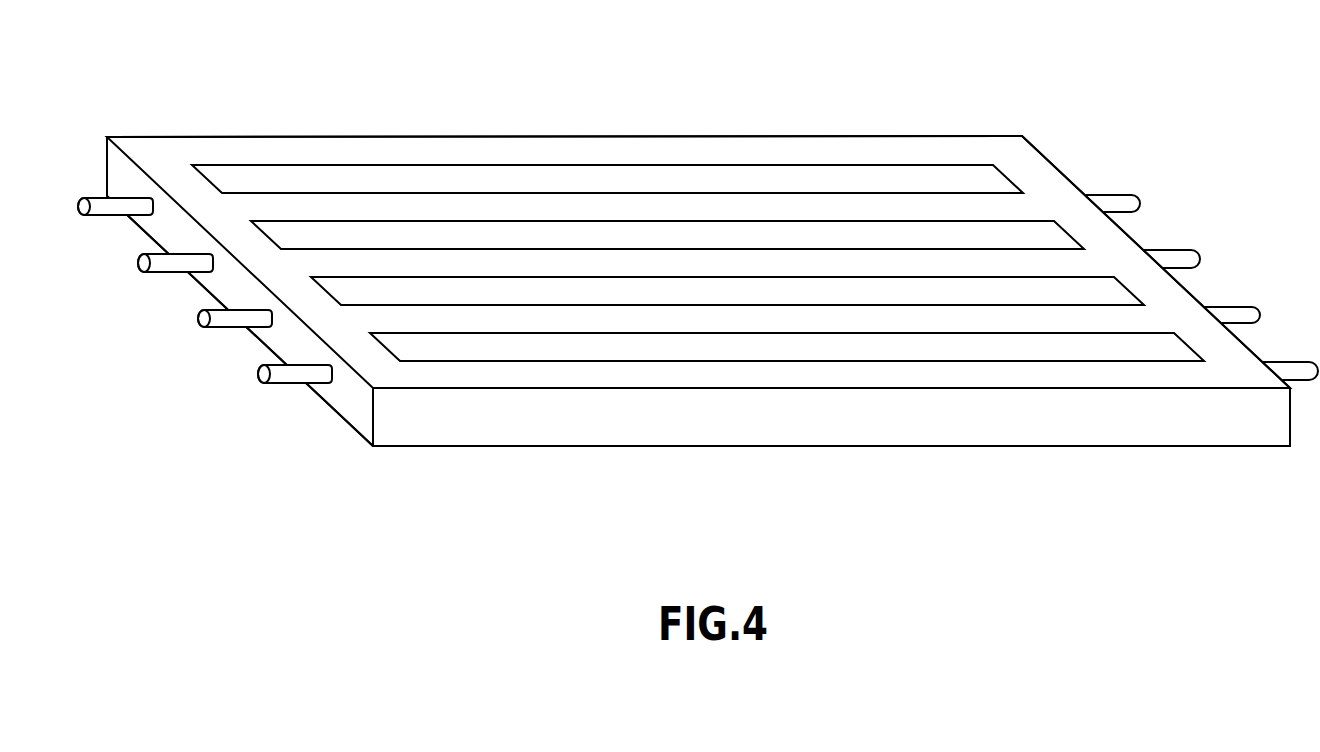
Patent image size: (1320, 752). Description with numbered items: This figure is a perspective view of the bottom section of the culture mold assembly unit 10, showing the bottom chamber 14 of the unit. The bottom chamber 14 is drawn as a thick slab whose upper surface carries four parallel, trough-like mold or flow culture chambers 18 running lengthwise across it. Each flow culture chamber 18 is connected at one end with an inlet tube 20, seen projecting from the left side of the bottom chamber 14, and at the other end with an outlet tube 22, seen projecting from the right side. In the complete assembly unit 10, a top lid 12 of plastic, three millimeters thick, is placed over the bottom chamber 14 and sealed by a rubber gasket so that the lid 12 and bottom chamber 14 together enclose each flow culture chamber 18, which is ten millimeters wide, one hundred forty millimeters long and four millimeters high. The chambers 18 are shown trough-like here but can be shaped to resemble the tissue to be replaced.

The culture mold assembly unit 10 is at (815, 113).
The top lid 12 is at (940, 148).
The bottom chamber 14 is at (1023, 428).
The flow culture chamber 18 is at (415, 177).
The inlet tube 20 is at (218, 328).
The outlet tube 22 is at (1115, 200).